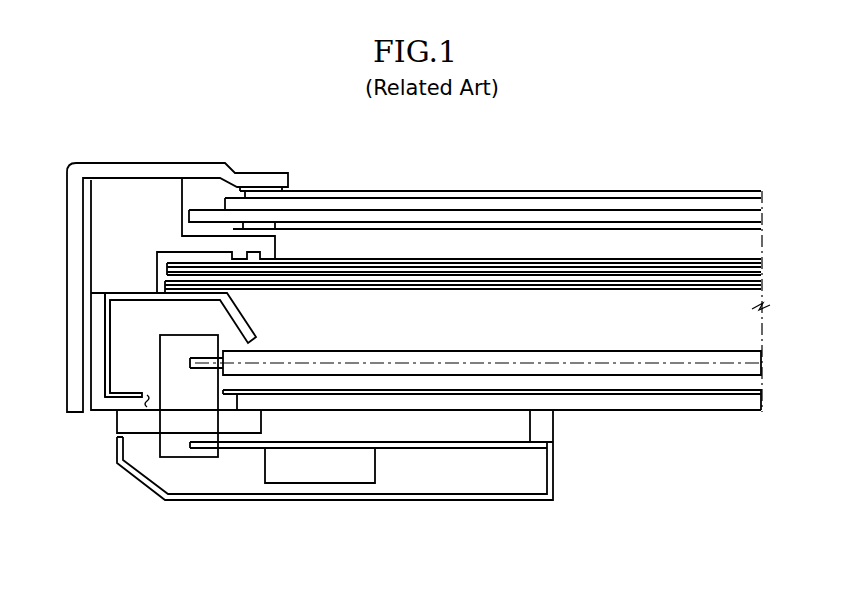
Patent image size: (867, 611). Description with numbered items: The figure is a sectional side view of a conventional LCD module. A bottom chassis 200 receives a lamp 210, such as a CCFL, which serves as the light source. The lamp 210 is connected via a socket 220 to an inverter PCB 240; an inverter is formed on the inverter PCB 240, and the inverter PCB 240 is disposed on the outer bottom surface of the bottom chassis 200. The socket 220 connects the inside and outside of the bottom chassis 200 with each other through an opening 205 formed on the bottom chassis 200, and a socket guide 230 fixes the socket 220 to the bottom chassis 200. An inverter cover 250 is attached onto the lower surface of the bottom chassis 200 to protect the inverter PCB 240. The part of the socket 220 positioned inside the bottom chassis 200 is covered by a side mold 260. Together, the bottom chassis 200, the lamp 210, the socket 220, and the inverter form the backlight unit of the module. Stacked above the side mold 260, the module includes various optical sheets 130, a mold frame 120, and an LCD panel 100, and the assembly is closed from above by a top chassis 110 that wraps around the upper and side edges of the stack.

The top chassis 110 is at (131, 169).
The mold frame 120 is at (112, 227).
The LCD panel 100 is at (768, 189).
The optical sheets 130 is at (768, 257).
The bottom chassis 200 is at (104, 356).
The side mold 260 is at (106, 327).
The opening 205 is at (141, 399).
The lamp 210 is at (763, 360).
The socket 220 is at (182, 390).
The socket guide 230 is at (243, 427).
The inverter cover 250 is at (322, 500).
The inverter PCB 240 is at (418, 447).